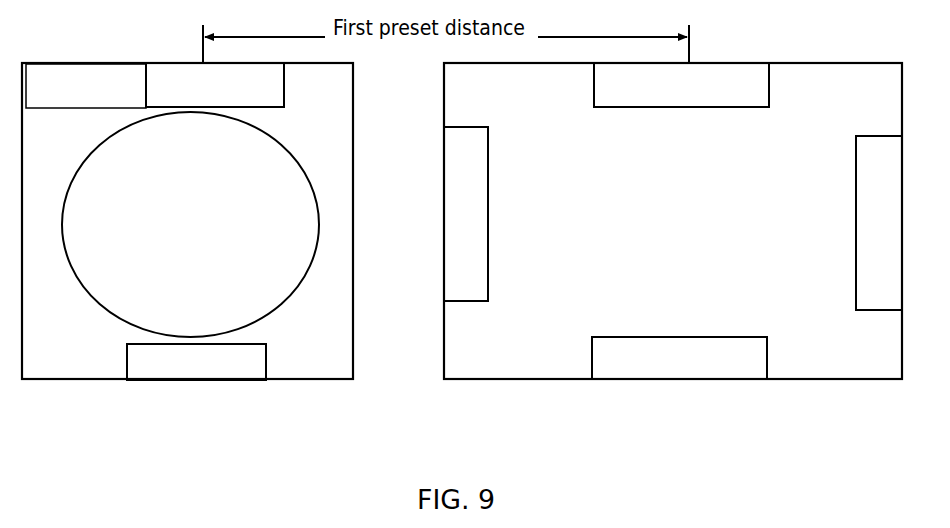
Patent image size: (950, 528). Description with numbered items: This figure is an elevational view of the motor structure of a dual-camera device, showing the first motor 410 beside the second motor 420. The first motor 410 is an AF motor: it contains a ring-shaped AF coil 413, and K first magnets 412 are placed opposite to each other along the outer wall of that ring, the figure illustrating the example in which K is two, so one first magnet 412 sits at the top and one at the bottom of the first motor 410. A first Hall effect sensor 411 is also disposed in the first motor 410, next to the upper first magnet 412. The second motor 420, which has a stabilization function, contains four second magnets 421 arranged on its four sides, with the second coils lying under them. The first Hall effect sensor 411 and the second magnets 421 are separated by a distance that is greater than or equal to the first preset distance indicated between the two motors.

The first motor 410 is at (187, 221).
The first Hall effect sensor 411 is at (86, 86).
The first magnets 412 is at (205, 221).
The AF coil 413 is at (130, 312).
The second motor 420 is at (673, 221).
The second magnets 421 is at (673, 221).